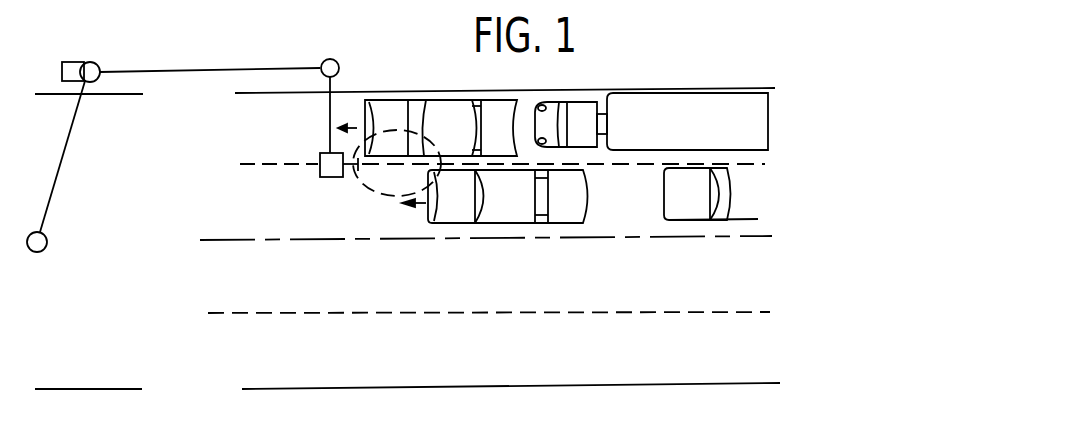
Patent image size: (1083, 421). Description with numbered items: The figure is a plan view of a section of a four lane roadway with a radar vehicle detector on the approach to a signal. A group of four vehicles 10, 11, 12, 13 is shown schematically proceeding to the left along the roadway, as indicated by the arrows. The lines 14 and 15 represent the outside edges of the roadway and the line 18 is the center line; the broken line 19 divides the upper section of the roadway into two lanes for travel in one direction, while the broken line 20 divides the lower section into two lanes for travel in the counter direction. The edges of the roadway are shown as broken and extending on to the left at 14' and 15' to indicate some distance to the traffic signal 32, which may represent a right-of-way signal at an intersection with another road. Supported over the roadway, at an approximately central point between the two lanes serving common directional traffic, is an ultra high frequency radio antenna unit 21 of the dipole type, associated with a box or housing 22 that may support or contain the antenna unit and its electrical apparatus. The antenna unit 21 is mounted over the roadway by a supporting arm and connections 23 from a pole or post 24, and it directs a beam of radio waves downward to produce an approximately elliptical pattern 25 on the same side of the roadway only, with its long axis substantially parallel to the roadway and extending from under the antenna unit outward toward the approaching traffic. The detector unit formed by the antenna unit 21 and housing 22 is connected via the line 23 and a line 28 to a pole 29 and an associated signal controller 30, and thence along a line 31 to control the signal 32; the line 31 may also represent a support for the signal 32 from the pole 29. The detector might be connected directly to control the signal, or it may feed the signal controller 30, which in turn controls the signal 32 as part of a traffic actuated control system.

The vehicle 10 is at (449, 100).
The vehicle 11 is at (574, 101).
The vehicle 12 is at (587, 194).
The vehicle 13 is at (664, 195).
The outside edge line of roadway 14 is at (505, 79).
The extended edge line of roadway 14' is at (89, 107).
The outside edge line of roadway 15 is at (511, 375).
The extended edge line of roadway 15' is at (88, 376).
The center line 18 is at (235, 240).
The broken lane line 19 is at (253, 164).
The broken lane line 20 is at (311, 313).
The ultra high frequency radio antenna unit 21 is at (358, 171).
The housing 22 is at (320, 173).
The supporting arm and connections 23 is at (330, 127).
The pole 24 is at (339, 68).
The elliptical pattern 25 is at (387, 197).
The line 28 is at (203, 68).
The pole 29 is at (97, 65).
The signal controller 30 is at (62, 72).
The line 31 is at (67, 160).
The traffic signal 32 is at (47, 242).